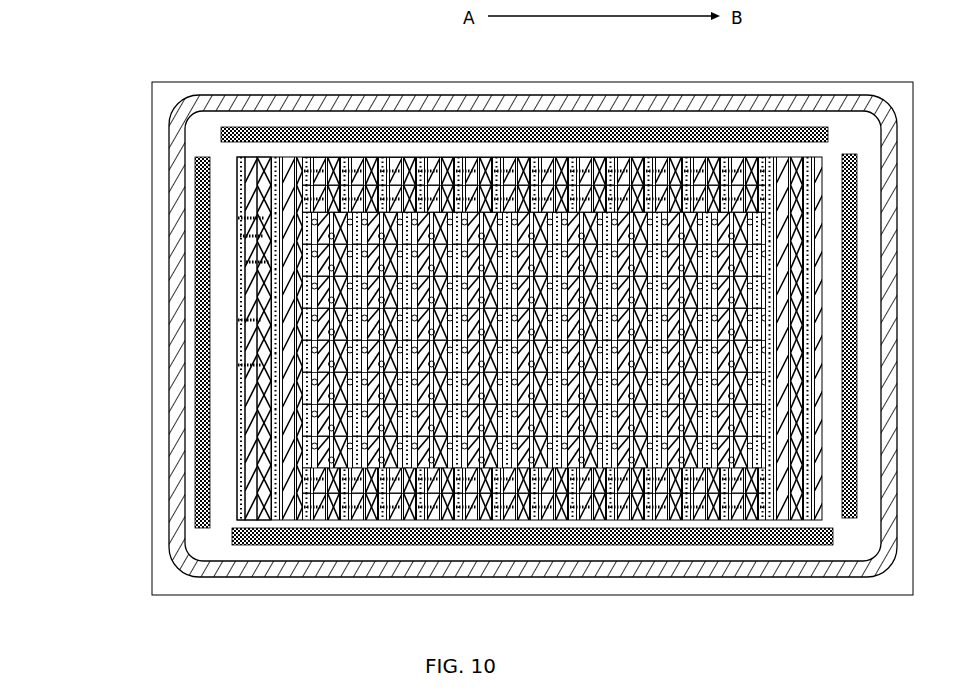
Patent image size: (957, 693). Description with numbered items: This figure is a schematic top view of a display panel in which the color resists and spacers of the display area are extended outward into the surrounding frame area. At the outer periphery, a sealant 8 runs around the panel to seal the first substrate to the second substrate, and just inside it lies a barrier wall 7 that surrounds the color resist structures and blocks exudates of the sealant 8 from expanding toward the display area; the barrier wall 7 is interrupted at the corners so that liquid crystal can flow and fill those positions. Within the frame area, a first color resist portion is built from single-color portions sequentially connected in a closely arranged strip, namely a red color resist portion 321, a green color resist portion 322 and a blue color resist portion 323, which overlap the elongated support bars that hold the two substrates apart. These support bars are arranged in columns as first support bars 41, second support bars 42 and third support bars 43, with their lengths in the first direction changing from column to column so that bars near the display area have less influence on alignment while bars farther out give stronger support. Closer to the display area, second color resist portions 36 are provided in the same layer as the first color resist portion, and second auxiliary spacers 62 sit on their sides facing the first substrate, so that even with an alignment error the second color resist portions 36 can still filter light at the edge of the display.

The sealant 8 is at (172, 139).
The barrier wall 7 is at (200, 186).
The third support bar 43 is at (240, 218).
The second support bar 42 is at (242, 236).
The first support bar 41 is at (255, 262).
The second auxiliary spacer 62 is at (245, 320).
The second color resist portion 36 is at (245, 365).
The red color resist portion 321 is at (239, 163).
The green color resist portion 322 is at (253, 160).
The blue color resist portion 323 is at (266, 160).